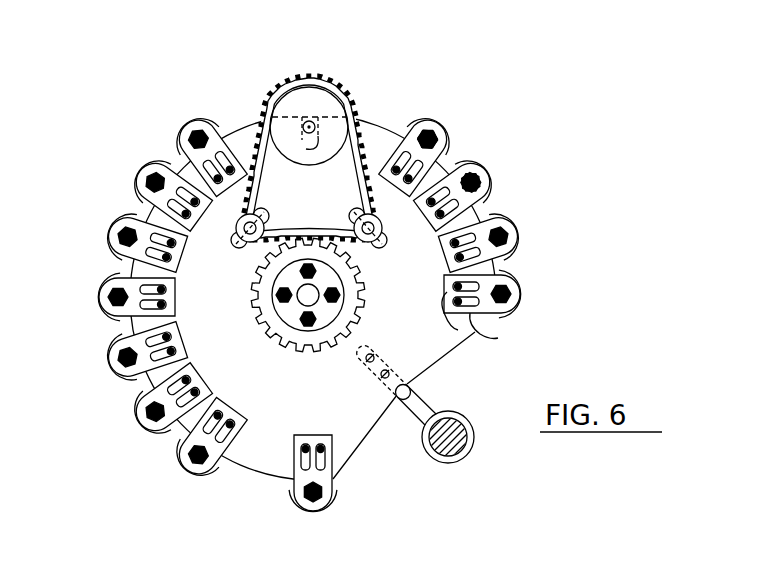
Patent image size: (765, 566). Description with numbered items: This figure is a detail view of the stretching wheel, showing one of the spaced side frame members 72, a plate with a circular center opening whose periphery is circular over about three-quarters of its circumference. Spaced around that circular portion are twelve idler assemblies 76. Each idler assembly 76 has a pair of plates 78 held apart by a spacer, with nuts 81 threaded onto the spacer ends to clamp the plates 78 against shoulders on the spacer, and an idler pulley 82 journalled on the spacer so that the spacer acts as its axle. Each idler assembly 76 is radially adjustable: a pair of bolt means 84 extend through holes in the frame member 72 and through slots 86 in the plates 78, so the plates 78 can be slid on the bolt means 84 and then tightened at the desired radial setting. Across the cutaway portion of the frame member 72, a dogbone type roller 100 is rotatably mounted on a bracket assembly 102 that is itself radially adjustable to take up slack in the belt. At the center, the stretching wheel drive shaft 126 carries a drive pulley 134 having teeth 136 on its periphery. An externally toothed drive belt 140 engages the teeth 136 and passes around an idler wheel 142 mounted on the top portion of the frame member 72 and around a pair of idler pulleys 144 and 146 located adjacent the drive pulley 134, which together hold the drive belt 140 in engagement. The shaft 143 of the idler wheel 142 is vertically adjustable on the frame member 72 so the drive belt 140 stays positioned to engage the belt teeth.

The side frame member 72 is at (265, 465).
The idler assembly 76 is at (124, 159).
The plate 78 is at (463, 168).
The nut 81 is at (468, 172).
The idler pulley 82 is at (483, 206).
The bolt means 84 is at (444, 300).
The slot 86 is at (493, 340).
The dogbone type roller 100 is at (472, 458).
The bracket assembly 102 is at (416, 394).
The stretching wheel drive shaft 126 is at (318, 292).
The drive pulley 134 is at (264, 316).
The teeth 136 is at (258, 284).
The drive belt 140 is at (285, 88).
The idler wheel 142 is at (329, 102).
The shaft 143 is at (309, 133).
The idler pulley 144 is at (247, 216).
The idler pulley 146 is at (356, 222).